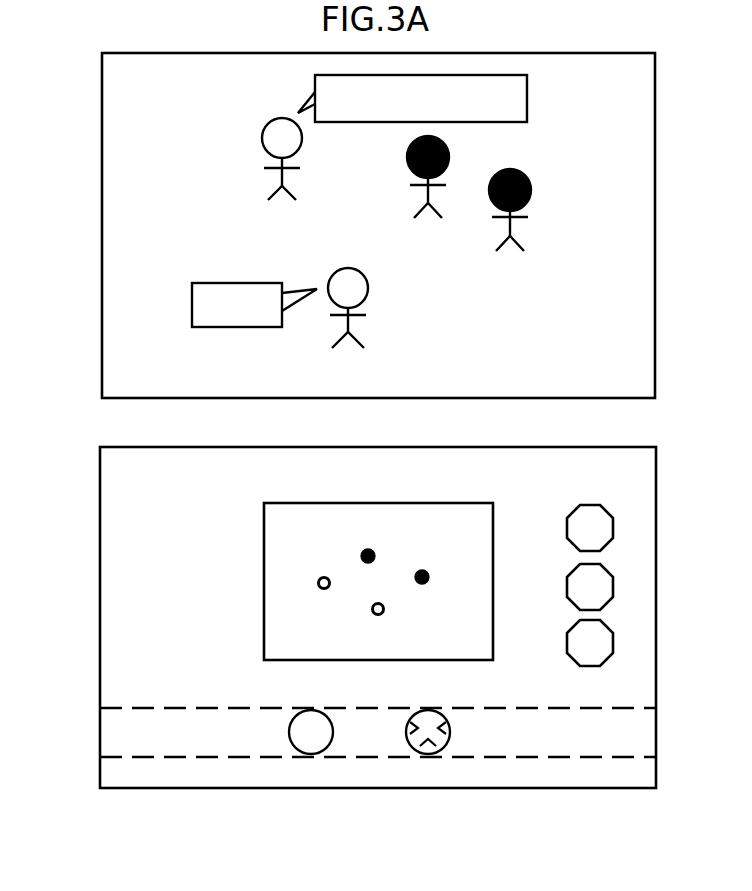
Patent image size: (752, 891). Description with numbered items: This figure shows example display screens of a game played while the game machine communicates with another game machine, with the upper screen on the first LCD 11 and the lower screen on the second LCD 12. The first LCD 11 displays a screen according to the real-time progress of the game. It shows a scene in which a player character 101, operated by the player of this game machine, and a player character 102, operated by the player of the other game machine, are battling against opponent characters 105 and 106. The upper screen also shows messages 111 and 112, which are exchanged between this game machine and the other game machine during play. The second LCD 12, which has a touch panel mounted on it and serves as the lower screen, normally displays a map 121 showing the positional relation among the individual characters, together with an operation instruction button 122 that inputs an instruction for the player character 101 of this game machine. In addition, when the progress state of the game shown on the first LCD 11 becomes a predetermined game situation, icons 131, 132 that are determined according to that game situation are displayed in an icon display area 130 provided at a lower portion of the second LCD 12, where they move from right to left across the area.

The first LCD 11 is at (102, 342).
The second LCD 12 is at (100, 682).
The player character 101 is at (355, 337).
The player character 102 is at (285, 200).
The opponent character 105 is at (513, 251).
The opponent character 106 is at (431, 218).
The message 111 is at (242, 327).
The message 112 is at (366, 122).
The map 121 is at (460, 503).
The operation instruction button 122 is at (613, 530).
The icon display area 130 is at (628, 734).
The icon 131 is at (311, 755).
The icon 132 is at (428, 755).